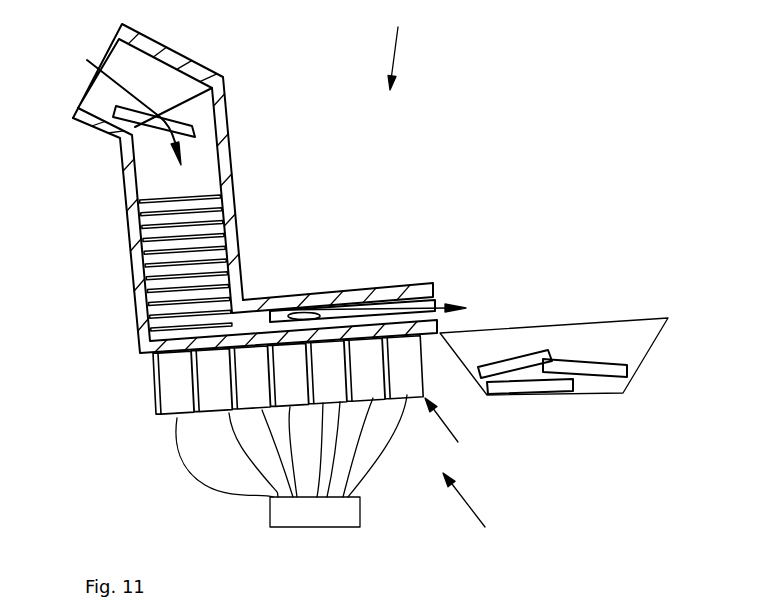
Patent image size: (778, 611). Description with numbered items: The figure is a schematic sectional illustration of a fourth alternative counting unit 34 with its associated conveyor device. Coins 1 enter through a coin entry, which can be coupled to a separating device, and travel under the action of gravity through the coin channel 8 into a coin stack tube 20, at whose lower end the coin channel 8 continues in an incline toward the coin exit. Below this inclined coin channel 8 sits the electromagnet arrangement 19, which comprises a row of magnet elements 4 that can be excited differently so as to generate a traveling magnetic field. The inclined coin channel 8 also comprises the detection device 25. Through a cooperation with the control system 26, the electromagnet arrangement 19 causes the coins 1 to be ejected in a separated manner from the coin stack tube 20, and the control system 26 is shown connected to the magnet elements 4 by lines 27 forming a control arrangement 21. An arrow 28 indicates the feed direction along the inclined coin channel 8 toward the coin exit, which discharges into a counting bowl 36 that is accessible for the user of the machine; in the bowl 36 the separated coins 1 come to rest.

The coins 1 is at (188, 127).
The magnet elements 4 is at (153, 395).
The coin channel 8 is at (177, 85).
The electromagnet arrangement 19 is at (455, 428).
The coin stack tube 20 is at (143, 187).
The control arrangement 21 is at (476, 507).
The detection device 25 is at (325, 313).
The control system 26 is at (326, 523).
The lines 27 is at (210, 487).
The feed direction arrow 28 is at (440, 300).
The counting unit 34 is at (397, 48).
The counting bowl 36 is at (555, 322).